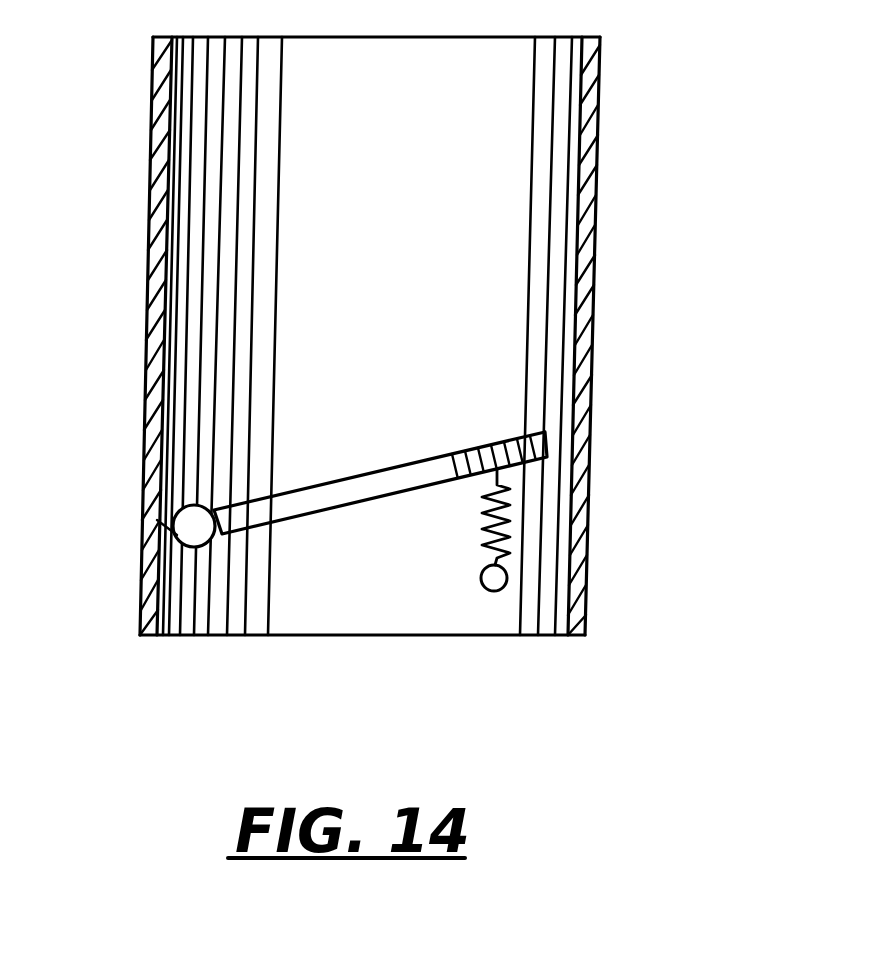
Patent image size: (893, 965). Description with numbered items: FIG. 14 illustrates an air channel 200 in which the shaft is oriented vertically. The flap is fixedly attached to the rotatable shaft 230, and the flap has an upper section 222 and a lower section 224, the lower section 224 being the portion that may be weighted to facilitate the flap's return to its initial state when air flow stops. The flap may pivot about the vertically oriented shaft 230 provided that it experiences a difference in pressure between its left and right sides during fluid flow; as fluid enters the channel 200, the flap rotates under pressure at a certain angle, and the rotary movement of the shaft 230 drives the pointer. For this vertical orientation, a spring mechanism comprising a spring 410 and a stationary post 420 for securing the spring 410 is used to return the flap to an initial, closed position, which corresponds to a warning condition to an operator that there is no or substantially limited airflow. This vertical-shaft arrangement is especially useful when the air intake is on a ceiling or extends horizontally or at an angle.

The housing 200 is at (586, 250).
The lower section 224 is at (384, 478).
The rotatable shaft 230 is at (193, 527).
The upper section 222 is at (173, 537).
The spring 410 is at (490, 525).
The stationary post 420 is at (494, 592).